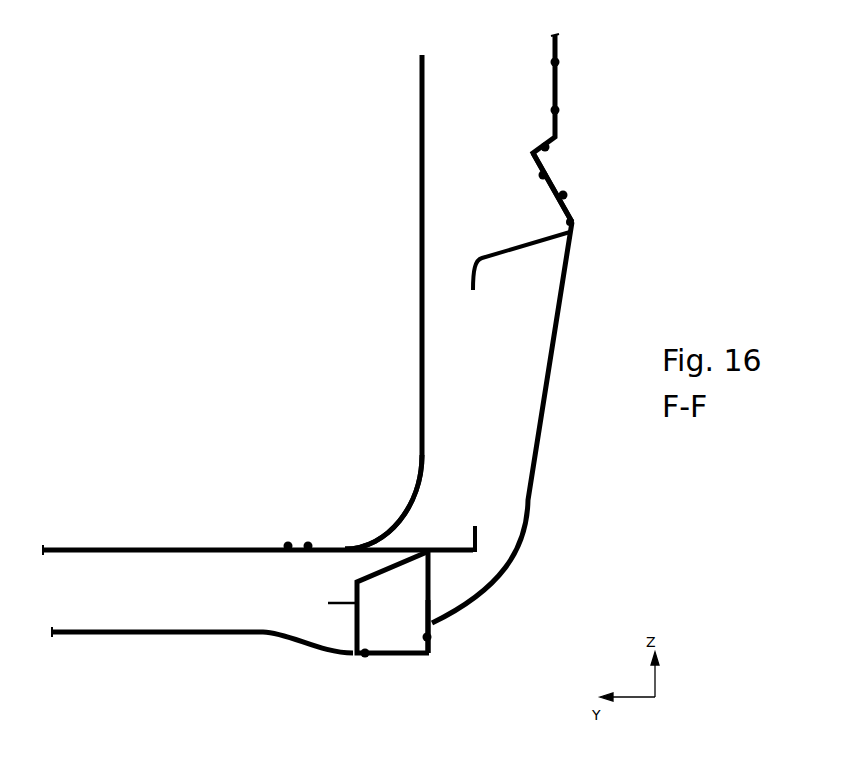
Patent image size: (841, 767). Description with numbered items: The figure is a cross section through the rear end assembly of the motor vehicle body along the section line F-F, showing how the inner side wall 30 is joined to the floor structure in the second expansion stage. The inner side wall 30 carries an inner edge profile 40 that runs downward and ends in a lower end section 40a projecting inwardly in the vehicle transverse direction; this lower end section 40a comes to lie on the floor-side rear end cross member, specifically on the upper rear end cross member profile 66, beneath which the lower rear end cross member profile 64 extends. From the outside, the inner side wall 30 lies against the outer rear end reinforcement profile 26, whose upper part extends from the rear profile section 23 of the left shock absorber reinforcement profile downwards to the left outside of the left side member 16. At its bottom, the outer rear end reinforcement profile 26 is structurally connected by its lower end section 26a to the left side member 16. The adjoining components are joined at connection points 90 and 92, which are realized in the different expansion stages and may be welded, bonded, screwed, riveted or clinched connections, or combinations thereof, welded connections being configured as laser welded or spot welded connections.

The left side member 16 is at (400, 656).
The rear profile section 23 is at (492, 259).
The outer rear end reinforcement profile 26 is at (531, 478).
The lower end section 26a is at (571, 212).
The inner side wall 30 is at (552, 86).
The inner edge profile 40 is at (420, 233).
The lower end section 40a is at (348, 545).
The lower rear end cross member profile 64 is at (182, 634).
The upper rear end cross member profile 66 is at (164, 548).
The connection point 90 is at (548, 175).
The connection point 92 is at (559, 62).